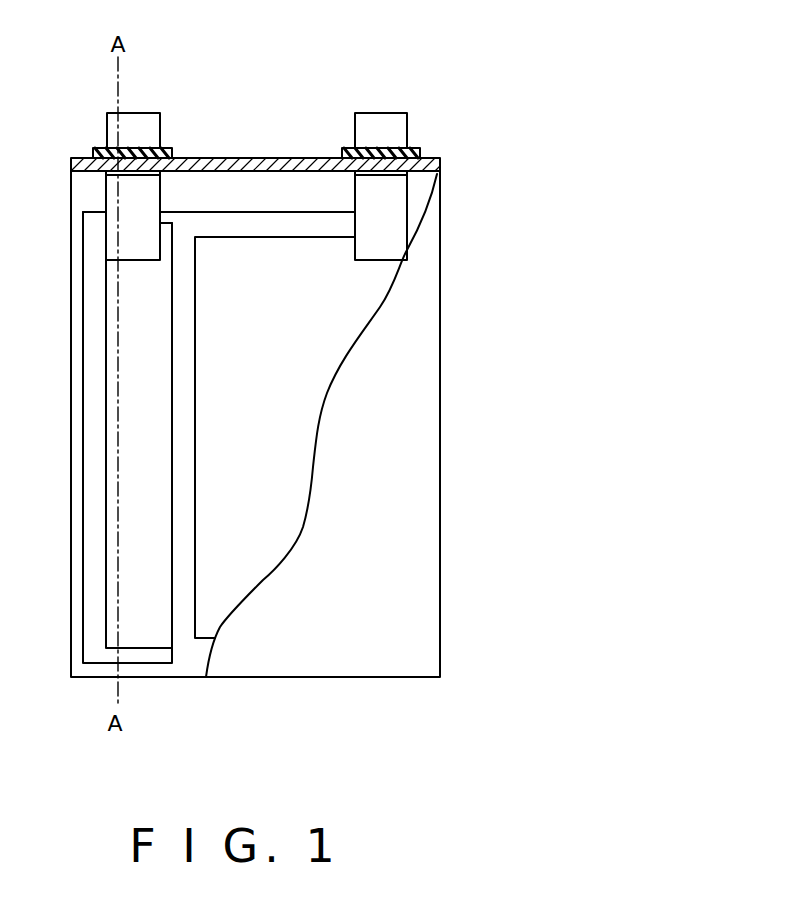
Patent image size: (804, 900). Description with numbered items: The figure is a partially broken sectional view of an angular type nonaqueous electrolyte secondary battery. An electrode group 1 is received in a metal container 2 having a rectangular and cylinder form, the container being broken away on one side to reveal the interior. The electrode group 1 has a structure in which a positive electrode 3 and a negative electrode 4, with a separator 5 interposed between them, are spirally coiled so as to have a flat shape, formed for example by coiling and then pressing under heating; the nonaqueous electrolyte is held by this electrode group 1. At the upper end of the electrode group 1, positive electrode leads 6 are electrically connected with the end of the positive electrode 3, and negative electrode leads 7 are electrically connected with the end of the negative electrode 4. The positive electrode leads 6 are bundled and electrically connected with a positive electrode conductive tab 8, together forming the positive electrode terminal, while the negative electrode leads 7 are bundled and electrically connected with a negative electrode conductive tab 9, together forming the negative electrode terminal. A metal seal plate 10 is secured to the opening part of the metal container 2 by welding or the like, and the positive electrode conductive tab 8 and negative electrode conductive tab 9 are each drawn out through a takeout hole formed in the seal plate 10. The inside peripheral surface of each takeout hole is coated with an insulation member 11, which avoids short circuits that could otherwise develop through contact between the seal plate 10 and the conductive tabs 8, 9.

The electrode group 1 is at (304, 210).
The metal container 2 is at (420, 509).
The positive electrode 3 is at (116, 397).
The negative electrode 4 is at (240, 278).
The separator 5 is at (180, 503).
The positive electrode lead 6 is at (115, 198).
The negative electrode lead 7 is at (397, 205).
The positive electrode conductive tab 8 is at (130, 122).
The negative electrode conductive tab 9 is at (387, 123).
The seal plate 10 is at (83, 157).
The insulation member 11 is at (172, 148).